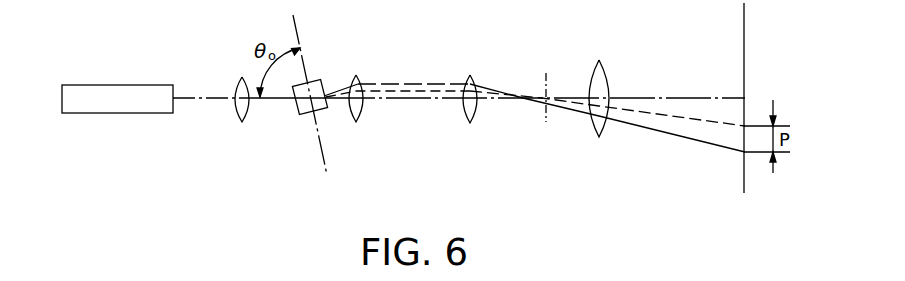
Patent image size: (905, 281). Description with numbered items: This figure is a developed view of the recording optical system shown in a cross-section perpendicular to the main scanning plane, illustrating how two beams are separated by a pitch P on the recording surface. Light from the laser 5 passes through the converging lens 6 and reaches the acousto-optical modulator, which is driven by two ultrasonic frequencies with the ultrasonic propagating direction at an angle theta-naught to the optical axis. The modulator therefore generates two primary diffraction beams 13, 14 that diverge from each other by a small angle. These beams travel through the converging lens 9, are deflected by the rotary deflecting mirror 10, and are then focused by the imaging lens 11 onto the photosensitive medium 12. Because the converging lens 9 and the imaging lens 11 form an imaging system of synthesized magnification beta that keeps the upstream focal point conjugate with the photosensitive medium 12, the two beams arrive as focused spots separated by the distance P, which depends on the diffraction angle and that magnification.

The laser 5 is at (127, 108).
The converging lens 6 is at (238, 116).
The primary diffraction beam 13 is at (327, 96).
The primary diffraction beam 14 is at (340, 90).
The converging lens 9 is at (465, 112).
The rotary deflecting mirror 10 is at (545, 117).
The imaging lens 11 is at (597, 128).
The photosensitive medium 12 is at (744, 181).